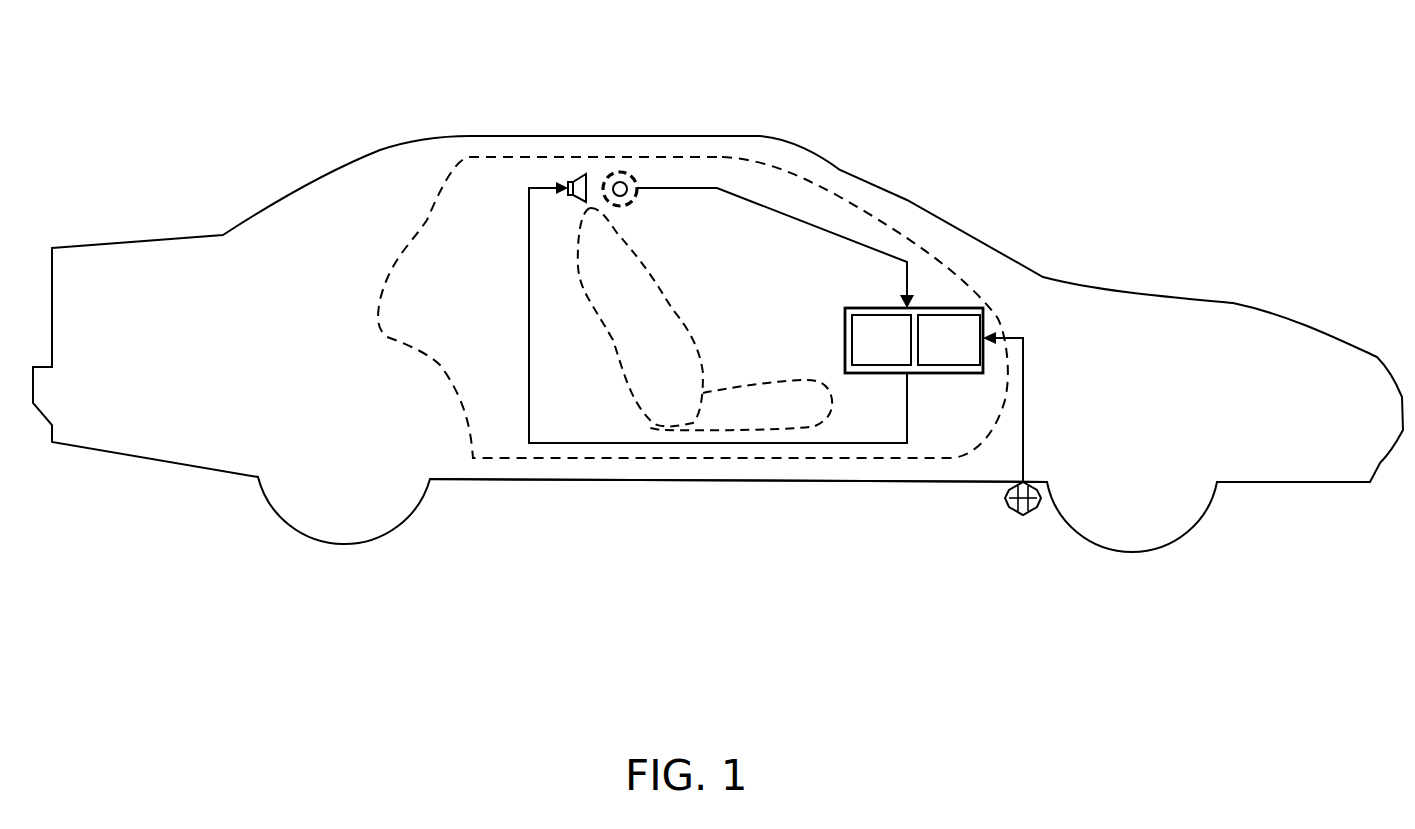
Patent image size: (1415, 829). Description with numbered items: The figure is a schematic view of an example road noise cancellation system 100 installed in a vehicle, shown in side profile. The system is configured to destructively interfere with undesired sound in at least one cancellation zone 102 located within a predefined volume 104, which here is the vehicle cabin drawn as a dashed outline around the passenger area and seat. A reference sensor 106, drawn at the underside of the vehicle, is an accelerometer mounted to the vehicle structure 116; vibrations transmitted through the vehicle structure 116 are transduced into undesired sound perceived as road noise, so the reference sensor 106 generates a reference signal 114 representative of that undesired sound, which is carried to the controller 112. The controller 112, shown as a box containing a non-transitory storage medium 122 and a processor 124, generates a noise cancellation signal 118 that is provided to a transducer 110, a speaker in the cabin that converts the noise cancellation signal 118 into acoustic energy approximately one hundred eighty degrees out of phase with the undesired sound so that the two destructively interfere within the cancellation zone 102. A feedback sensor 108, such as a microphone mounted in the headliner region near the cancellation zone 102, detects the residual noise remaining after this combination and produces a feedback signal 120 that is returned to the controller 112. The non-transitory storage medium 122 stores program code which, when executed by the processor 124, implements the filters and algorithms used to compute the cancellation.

The noise cancellation system 100 is at (311, 96).
The cancellation zone 102 is at (634, 202).
The predefined volume 104 is at (458, 193).
The reference sensor 106 is at (1014, 509).
The feedback sensor 108 is at (623, 180).
The transducer 110 is at (577, 178).
The controller 112 is at (947, 278).
The reference signal 114 is at (1023, 400).
The vehicle structure 116 is at (672, 482).
The noise cancellation signal 118 is at (529, 287).
The feedback signal 120 is at (785, 213).
The non-transitory storage medium 122 is at (905, 349).
The processor 124 is at (973, 349).